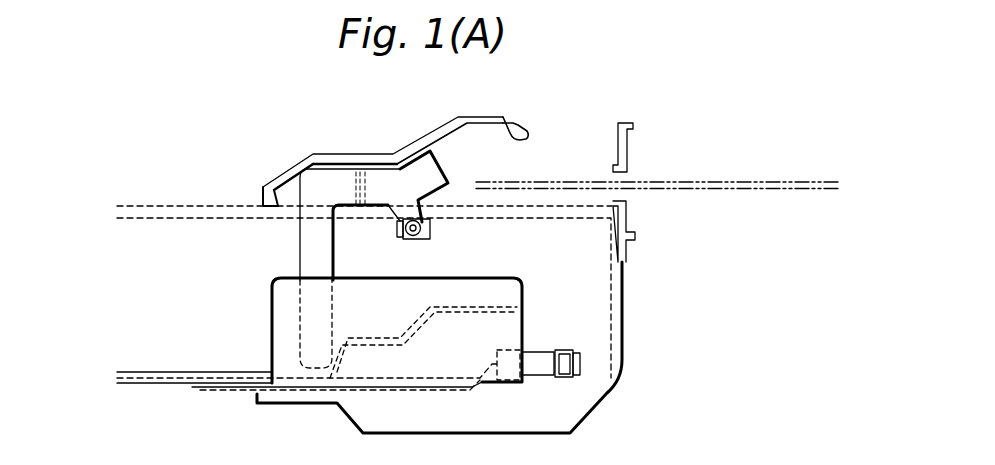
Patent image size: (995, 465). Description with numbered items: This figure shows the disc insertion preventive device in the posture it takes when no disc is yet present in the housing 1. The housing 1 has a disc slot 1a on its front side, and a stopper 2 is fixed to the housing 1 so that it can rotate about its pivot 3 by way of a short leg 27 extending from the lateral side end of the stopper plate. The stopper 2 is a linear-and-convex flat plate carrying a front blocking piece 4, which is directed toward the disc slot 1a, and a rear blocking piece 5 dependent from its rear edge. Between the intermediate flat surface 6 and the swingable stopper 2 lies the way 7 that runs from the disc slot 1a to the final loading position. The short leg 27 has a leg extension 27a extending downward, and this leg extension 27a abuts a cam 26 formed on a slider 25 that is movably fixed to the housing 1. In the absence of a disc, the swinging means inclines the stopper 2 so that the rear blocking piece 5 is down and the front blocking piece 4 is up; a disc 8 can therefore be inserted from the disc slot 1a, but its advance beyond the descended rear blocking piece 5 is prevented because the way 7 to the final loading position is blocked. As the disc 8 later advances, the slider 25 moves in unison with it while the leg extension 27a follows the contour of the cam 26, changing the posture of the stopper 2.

The housing 1 is at (622, 290).
The disc slot 1a is at (620, 177).
The stopper 2 is at (397, 152).
The pivot 3 is at (430, 230).
The front blocking piece 4 is at (512, 124).
The rear blocking piece 5 is at (262, 200).
The intermediate flat surface 6 is at (455, 206).
The way 7 is at (272, 212).
The disc 8 is at (718, 190).
The slider 25 is at (133, 372).
The cam 26 is at (387, 333).
The short leg 27 is at (396, 220).
The leg extension 27a is at (300, 257).